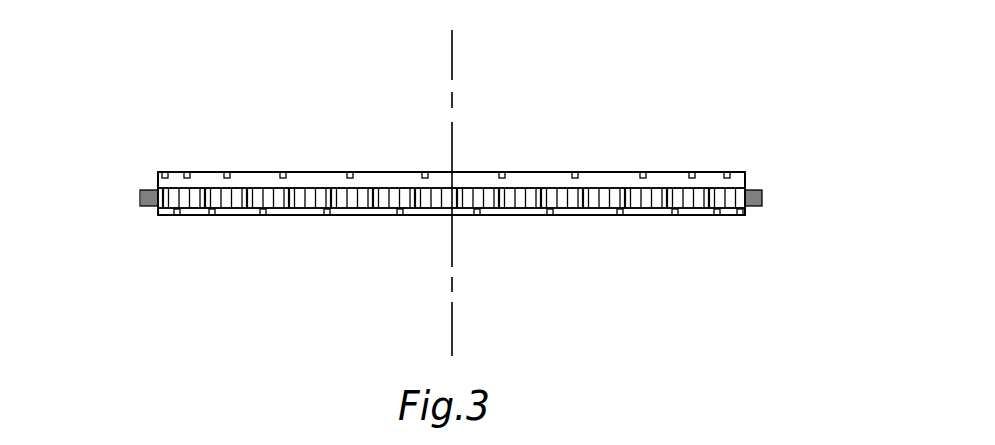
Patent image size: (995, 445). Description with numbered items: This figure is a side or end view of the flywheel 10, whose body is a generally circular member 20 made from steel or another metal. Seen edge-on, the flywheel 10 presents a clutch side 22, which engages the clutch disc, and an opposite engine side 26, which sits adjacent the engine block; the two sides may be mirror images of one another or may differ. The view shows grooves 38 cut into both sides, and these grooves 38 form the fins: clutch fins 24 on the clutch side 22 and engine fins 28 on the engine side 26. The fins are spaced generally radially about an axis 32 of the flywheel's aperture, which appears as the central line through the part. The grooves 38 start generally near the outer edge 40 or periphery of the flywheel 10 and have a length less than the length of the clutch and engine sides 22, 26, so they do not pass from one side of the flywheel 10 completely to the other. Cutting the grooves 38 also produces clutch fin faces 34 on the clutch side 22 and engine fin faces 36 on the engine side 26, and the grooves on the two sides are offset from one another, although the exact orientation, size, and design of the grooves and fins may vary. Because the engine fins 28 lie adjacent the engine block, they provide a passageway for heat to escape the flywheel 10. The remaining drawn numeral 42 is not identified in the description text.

The flywheel 10 is at (553, 108).
The circular member 20 is at (156, 178).
The clutch side 22 is at (175, 170).
The clutch fins 24 is at (253, 170).
The engine side 26 is at (187, 217).
The engine fins 28 is at (277, 217).
The axis 32 is at (453, 143).
The clutch fin faces 34 is at (325, 170).
The engine fin faces 36 is at (355, 217).
The grooves 38 is at (427, 170).
The outer edge 40 is at (746, 176).
The left threaded stud 42 is at (140, 197).